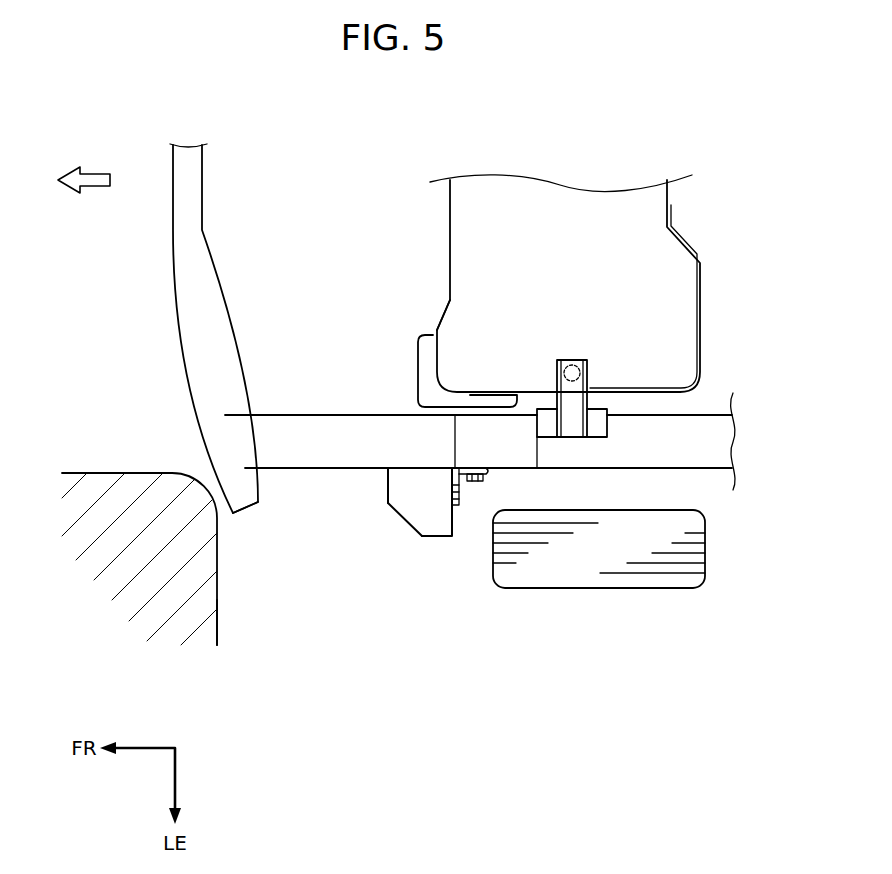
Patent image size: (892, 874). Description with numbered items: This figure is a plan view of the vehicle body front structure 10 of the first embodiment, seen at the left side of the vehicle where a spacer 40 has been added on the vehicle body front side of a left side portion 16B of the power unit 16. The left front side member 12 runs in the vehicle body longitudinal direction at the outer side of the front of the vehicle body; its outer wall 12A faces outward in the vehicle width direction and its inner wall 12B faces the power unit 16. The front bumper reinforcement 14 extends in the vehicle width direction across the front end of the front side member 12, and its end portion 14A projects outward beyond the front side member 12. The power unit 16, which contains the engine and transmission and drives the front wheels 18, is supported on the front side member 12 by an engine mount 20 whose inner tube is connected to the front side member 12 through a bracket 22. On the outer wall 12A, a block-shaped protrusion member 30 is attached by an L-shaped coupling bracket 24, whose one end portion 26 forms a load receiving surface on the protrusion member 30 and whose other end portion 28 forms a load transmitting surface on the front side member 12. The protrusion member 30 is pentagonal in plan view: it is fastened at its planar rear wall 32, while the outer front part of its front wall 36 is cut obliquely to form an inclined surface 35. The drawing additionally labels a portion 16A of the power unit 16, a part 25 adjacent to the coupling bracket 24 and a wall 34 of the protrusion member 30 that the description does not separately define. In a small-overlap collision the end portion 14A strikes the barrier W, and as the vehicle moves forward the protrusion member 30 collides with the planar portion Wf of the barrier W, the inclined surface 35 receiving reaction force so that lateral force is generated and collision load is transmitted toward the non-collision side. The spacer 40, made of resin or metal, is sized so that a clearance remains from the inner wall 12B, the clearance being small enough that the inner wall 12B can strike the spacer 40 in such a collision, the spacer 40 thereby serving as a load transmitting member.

The vehicle front structure 10 is at (371, 588).
The front side member 12 is at (267, 413).
The outer wall 12A is at (287, 470).
The inner wall 12B is at (305, 412).
The front bumper reinforcement 14 is at (180, 262).
The end portion 14A is at (245, 510).
The power unit 16 is at (568, 205).
The front wall of bumper member 16A is at (432, 326).
The left side portion 16B is at (652, 395).
The front wheel 18 is at (585, 589).
The engine mount 20 is at (572, 364).
The bracket 22 is at (597, 420).
The coupling bracket 24 is at (460, 467).
The nut 25 is at (478, 483).
The one end portion 26 is at (459, 508).
The other end portion 28 is at (488, 472).
The protrusion member 30 is at (420, 538).
The rear wall 32 is at (451, 512).
The upper wall of bracket 34 is at (395, 466).
The inclined surface 35 is at (403, 522).
The front wall 36 is at (383, 483).
The spacer 40 is at (427, 382).
The barrier W is at (122, 473).
The planar portion Wf is at (217, 618).